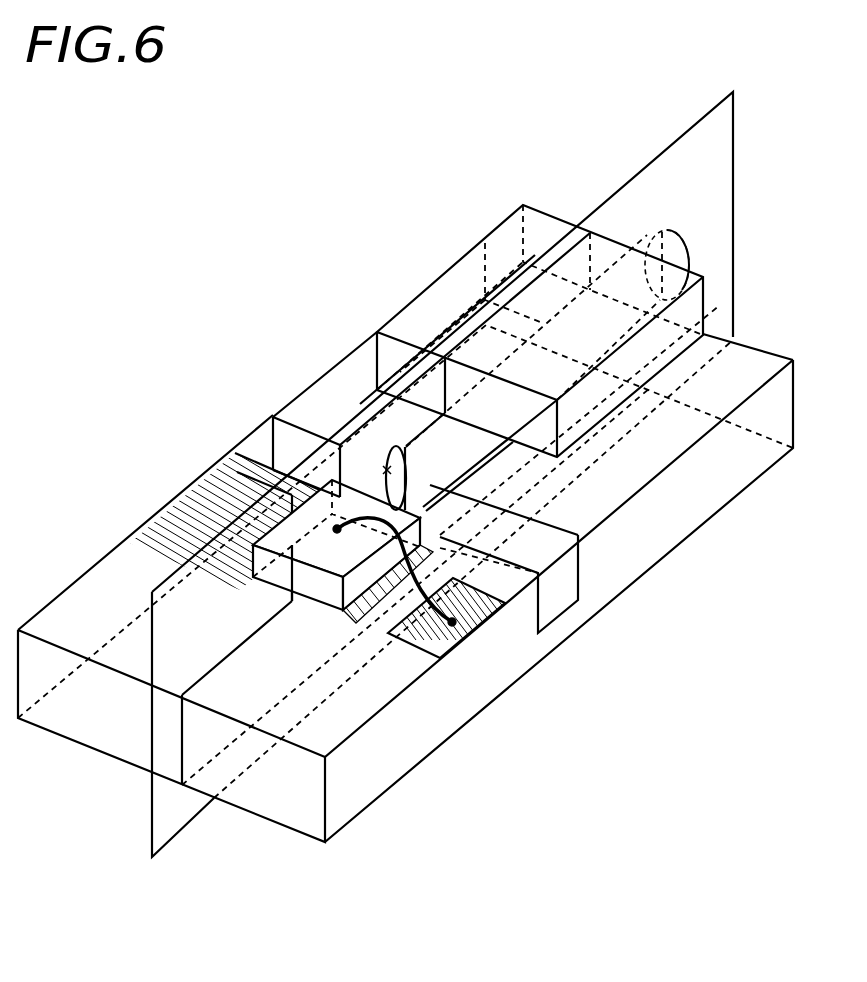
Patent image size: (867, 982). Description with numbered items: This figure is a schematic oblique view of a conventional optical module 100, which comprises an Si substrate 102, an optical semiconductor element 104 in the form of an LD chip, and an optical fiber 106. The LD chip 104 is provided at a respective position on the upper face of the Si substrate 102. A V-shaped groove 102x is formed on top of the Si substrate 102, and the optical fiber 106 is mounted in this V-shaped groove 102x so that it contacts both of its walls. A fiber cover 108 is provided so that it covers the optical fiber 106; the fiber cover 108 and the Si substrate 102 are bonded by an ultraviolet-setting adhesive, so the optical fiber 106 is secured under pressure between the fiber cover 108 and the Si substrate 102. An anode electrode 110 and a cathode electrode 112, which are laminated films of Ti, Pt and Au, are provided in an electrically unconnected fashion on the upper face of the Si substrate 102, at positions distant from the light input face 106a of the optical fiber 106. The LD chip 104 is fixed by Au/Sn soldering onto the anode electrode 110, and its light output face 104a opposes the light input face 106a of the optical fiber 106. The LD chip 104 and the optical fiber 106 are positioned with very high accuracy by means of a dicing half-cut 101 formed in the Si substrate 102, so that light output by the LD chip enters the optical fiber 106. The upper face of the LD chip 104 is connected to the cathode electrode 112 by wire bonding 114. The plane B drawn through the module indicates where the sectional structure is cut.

The optical module 100 is at (601, 150).
The dicing half-cut 101 is at (555, 605).
The Si substrate 102 is at (48, 722).
The V-shaped groove 102x is at (433, 482).
The optical semiconductor element 104 is at (343, 478).
The light output face 104a is at (365, 462).
The optical fiber 106 is at (412, 445).
The light input face 106a is at (386, 470).
The fiber cover 108 is at (538, 225).
The anode electrode 110 is at (187, 495).
The cathode electrode 112 is at (490, 610).
The wire bonding 114 is at (403, 607).
The plane B is at (714, 158).